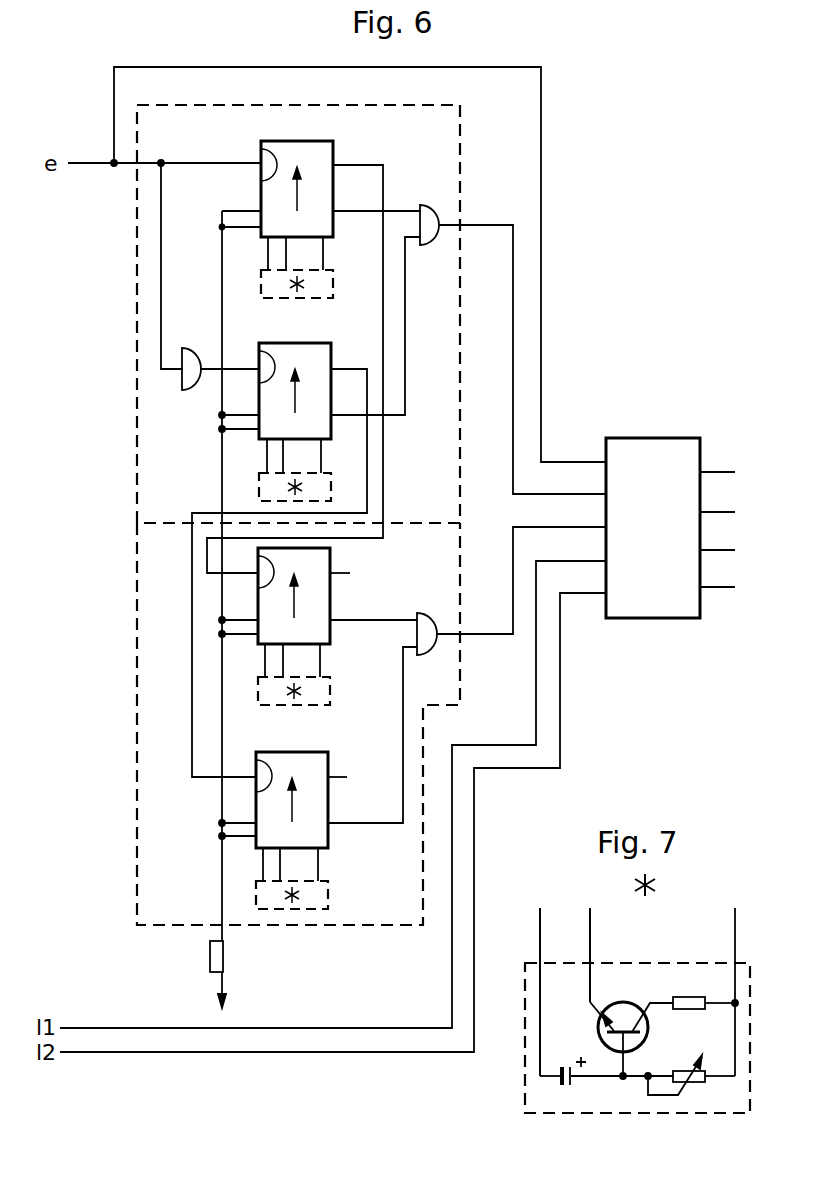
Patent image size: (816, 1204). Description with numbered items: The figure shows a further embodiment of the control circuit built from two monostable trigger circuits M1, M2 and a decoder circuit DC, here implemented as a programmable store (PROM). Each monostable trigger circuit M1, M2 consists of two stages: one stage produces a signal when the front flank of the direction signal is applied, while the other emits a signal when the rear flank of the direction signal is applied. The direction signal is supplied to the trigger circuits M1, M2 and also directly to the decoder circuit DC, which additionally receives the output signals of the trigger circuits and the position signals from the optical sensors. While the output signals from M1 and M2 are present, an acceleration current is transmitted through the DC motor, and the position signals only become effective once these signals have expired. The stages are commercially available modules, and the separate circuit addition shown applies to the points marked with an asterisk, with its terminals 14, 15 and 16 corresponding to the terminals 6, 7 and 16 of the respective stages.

In FIG. 6, the first terminal of timing module 6 is at (257, 660).
In FIG. 7, the first terminal of timing module 6 is at (552, 992).
In FIG. 6, the second terminal of timing module 7 is at (292, 660).
In FIG. 7, the second terminal of timing module 7 is at (602, 955).
In FIG. 6, the first terminal of timing module 14 is at (255, 457).
In FIG. 7, the first terminal of timing module 14 is at (551, 989).
In FIG. 6, the second terminal of timing module 15 is at (295, 457).
In FIG. 7, the second terminal of timing module 15 is at (601, 952).
In FIG. 6, the supply terminal of timing module 16 is at (331, 559).
In FIG. 7, the supply terminal of timing module 16 is at (751, 989).
In FIG. 6, the monostable trigger circuit M1 is at (352, 105).
In FIG. 6, the monostable trigger circuit M2 is at (360, 925).
In FIG. 6, the decoder circuit DC is at (636, 437).